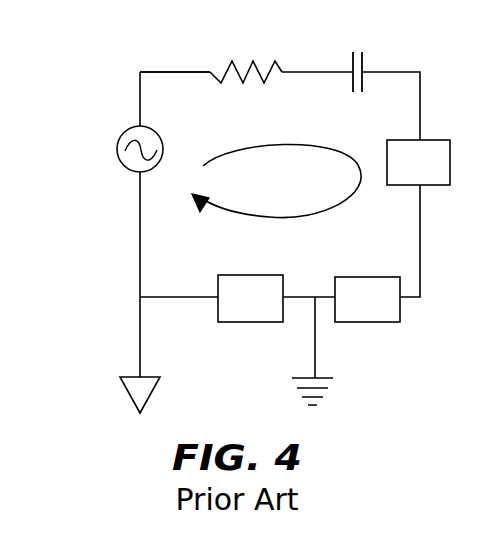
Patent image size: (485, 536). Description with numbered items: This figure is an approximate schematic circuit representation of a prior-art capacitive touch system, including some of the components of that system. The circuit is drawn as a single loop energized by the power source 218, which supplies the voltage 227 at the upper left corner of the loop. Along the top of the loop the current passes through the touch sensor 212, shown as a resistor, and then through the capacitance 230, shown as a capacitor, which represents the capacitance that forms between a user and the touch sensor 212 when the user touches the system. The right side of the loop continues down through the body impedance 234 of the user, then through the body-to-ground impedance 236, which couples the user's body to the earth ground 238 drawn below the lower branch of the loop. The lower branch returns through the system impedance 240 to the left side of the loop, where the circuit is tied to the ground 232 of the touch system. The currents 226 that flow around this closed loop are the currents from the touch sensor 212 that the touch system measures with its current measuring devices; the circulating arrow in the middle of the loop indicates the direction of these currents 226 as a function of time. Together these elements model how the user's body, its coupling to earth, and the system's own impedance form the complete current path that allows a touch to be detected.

The voltage 227 is at (140, 84).
The touch sensor 212 is at (233, 62).
The capacitance 230 is at (362, 63).
The power source 218 is at (118, 157).
The currents 226 is at (223, 152).
The body impedance 234 is at (398, 172).
The system impedance 240 is at (230, 312).
The body-to-ground impedance 236 is at (347, 312).
The ground 232 is at (152, 390).
The earth ground 238 is at (333, 379).